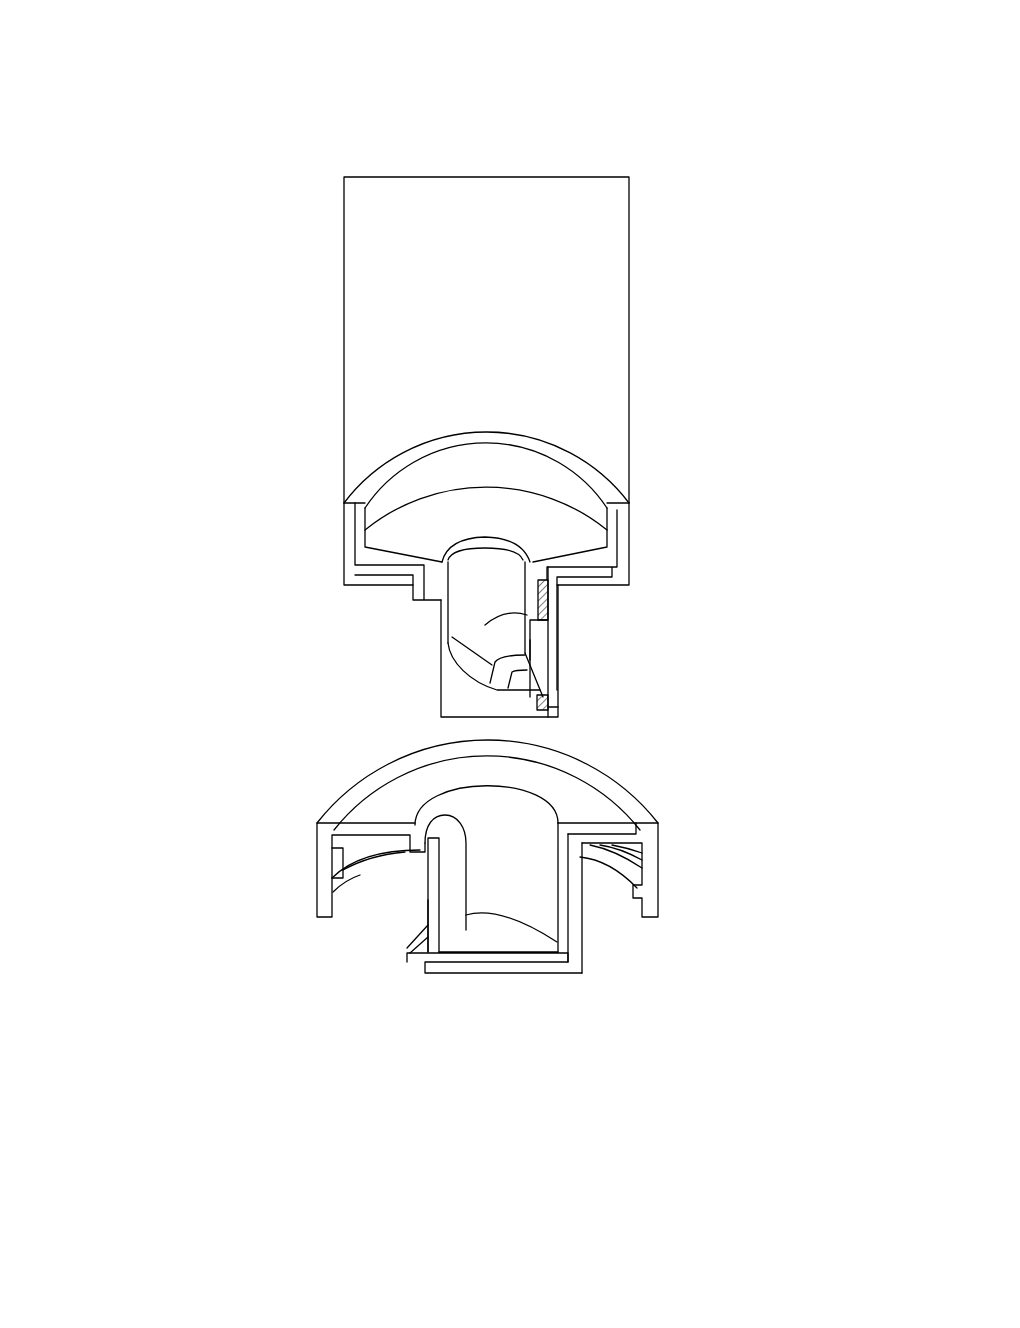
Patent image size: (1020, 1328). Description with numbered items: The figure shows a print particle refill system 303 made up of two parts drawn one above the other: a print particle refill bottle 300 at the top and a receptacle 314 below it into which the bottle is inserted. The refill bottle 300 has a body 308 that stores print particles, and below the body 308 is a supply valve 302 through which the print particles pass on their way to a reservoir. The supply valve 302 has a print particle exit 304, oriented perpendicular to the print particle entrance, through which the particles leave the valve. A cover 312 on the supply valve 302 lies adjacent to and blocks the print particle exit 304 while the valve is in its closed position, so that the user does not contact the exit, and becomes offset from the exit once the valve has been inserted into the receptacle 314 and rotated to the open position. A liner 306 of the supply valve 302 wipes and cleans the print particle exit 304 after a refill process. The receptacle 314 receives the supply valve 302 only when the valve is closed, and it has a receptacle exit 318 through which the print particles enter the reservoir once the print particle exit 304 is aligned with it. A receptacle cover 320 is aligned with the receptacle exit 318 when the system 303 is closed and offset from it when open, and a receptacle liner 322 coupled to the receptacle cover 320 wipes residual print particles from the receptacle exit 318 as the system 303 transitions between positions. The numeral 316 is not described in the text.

The print particle refill bottle 300 is at (486, 125).
The supply valve 302 is at (440, 642).
The system 303 is at (222, 655).
The print particle exit 304 is at (557, 640).
The liner 306 is at (551, 592).
The body 308 is at (630, 300).
The cover 312 is at (557, 690).
The receptacle 314 is at (495, 1055).
The cap body 316 is at (583, 947).
The receptacle exit 318 is at (427, 878).
The receptacle cover 320 is at (452, 907).
The receptacle liner 322 is at (427, 918).